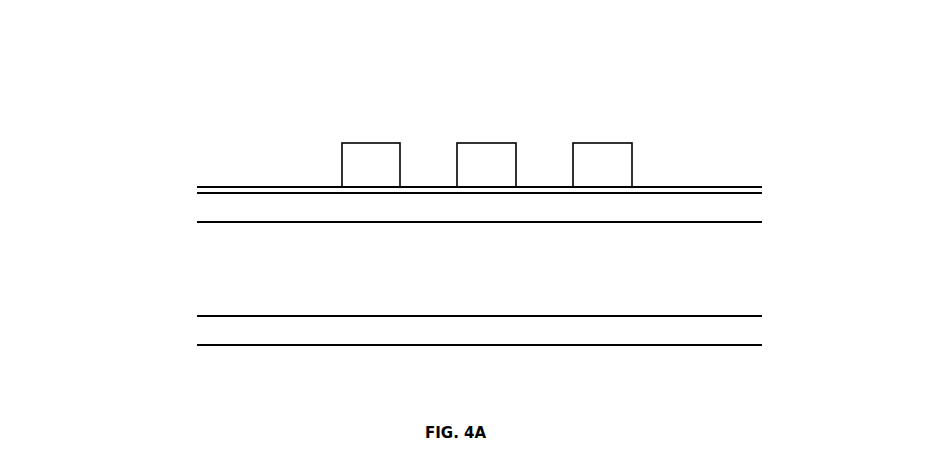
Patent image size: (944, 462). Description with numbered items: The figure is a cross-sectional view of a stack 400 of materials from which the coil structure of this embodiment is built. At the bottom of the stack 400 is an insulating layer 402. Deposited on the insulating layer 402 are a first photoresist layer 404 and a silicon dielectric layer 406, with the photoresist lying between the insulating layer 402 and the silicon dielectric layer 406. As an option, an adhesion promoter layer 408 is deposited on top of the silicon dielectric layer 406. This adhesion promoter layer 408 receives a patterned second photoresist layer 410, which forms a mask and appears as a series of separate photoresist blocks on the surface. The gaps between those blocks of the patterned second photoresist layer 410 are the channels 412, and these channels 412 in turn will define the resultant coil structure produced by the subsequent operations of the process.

The stack 400 is at (760, 97).
The insulating layer 402 is at (190, 332).
The first photoresist layer 404 is at (190, 269).
The silicon dielectric layer 406 is at (190, 211).
The adhesion promoter layer 408 is at (190, 187).
The patterned second photoresist layer 410 is at (335, 139).
The channels 412 is at (560, 132).